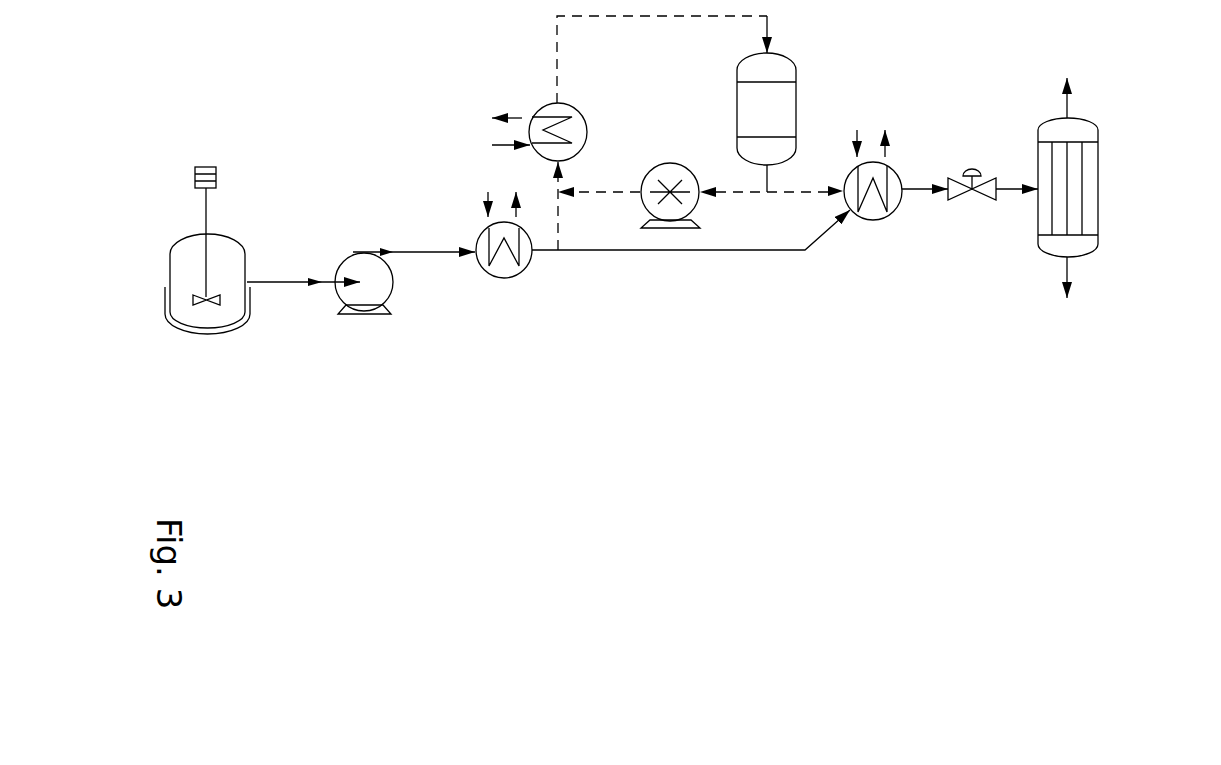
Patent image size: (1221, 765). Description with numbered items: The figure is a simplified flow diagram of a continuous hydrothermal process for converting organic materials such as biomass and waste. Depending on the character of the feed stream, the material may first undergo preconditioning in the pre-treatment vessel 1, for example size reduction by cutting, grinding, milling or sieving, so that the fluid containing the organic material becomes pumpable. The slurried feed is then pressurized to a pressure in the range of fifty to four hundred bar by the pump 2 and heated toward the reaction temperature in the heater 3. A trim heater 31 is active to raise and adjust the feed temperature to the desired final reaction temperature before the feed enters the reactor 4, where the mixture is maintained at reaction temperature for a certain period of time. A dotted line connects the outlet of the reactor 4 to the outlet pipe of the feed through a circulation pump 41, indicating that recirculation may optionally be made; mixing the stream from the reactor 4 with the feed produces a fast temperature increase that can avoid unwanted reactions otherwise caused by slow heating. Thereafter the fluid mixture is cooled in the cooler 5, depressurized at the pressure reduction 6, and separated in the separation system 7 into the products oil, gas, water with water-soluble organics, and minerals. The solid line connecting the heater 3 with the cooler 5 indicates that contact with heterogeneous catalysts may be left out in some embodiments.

The pre-treatment vessel 1 is at (218, 287).
The pump 2 is at (360, 284).
The heater 3 is at (512, 293).
The trim heater 31 is at (545, 127).
The reactor 4 is at (783, 93).
The circulation pump 41 is at (660, 164).
The cooler 5 is at (870, 221).
The depressurization 6 is at (985, 212).
The separation system 7 is at (1083, 150).